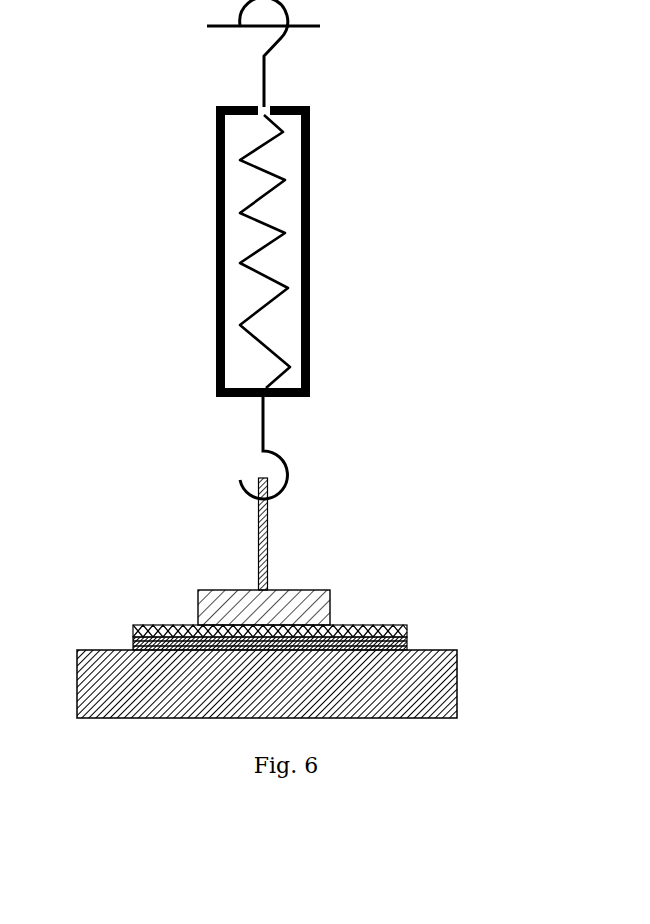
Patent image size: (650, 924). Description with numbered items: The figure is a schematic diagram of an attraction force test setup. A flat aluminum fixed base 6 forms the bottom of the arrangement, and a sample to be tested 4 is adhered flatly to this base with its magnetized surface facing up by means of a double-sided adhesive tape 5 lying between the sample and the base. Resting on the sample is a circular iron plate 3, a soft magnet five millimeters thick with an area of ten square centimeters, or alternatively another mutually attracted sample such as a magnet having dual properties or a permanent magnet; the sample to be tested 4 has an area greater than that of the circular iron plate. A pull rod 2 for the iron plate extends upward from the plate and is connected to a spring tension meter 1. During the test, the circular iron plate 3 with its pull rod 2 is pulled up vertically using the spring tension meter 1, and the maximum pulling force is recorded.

The spring tension meter 1 is at (310, 236).
The pull rod for an iron plate 2 is at (255, 540).
The circular iron plate 3 is at (297, 590).
The sample to be tested 4 is at (150, 630).
The double-sided adhesive tape 5 is at (405, 645).
The flat aluminum fixed base 6 is at (457, 676).